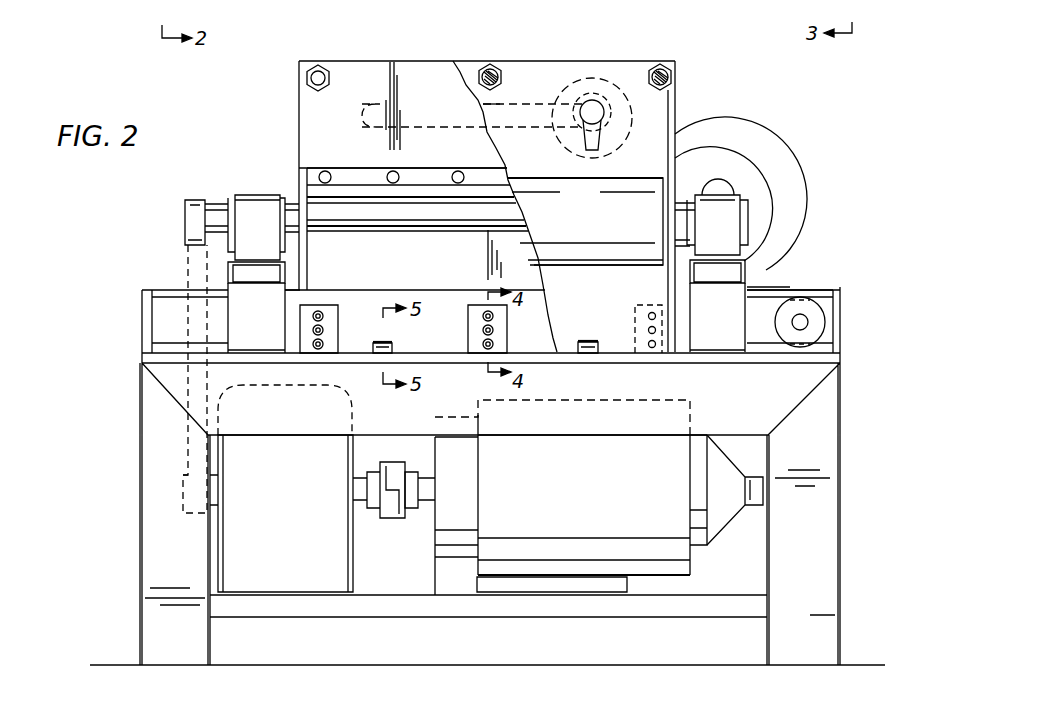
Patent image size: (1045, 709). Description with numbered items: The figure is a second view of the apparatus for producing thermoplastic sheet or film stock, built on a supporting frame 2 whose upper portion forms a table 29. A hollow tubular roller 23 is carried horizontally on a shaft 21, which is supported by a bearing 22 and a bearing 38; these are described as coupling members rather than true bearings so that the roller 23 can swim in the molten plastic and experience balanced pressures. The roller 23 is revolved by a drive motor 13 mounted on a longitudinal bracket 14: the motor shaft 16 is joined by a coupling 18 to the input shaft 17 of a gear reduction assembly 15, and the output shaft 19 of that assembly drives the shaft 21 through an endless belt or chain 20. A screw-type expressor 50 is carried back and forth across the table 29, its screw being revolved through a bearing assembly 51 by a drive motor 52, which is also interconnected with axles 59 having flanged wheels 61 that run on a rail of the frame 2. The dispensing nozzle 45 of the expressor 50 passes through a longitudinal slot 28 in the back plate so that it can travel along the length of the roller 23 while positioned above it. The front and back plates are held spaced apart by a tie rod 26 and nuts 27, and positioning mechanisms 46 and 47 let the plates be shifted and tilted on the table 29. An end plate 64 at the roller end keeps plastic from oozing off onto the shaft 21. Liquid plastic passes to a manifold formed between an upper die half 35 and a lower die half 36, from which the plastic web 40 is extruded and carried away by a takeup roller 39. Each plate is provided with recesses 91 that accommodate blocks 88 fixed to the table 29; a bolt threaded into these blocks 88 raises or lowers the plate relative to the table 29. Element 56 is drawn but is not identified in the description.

The frame 2 is at (840, 476).
The drive motor 13 is at (690, 555).
The longitudinal bracket 14 is at (407, 595).
The gear reduction assembly 15 is at (353, 562).
The shaft 16 is at (421, 508).
The input shaft 17 is at (358, 478).
The coupling 18 is at (391, 468).
The output shaft 19 is at (186, 497).
The endless belt or chain 20 is at (193, 200).
The shaft 21 is at (185, 214).
The bearing 22 is at (252, 195).
The roller 23 is at (630, 178).
The tie rod 26 is at (320, 72).
The nuts 27 is at (305, 83).
The slot 28 is at (513, 128).
The table 29 is at (350, 355).
The upper die half 35 is at (357, 172).
The lower die half 36 is at (349, 232).
The bearing 38 is at (702, 192).
The takeup roller 39 is at (400, 232).
The plastic web 40 is at (425, 195).
The dispensing nozzle 45 is at (606, 112).
The positioning mechanism 46 is at (648, 302).
The positioning mechanism 47 is at (328, 303).
The screw-type expressor 50 is at (590, 96).
The bearing assembly 51 is at (568, 84).
The drive motor 52 is at (790, 170).
The bracket 56 is at (800, 288).
The axles 59 is at (806, 326).
The flanged wheels 61 is at (812, 300).
The end plate 64 is at (683, 136).
The blocks 88 is at (393, 347).
The recess 91 is at (375, 342).